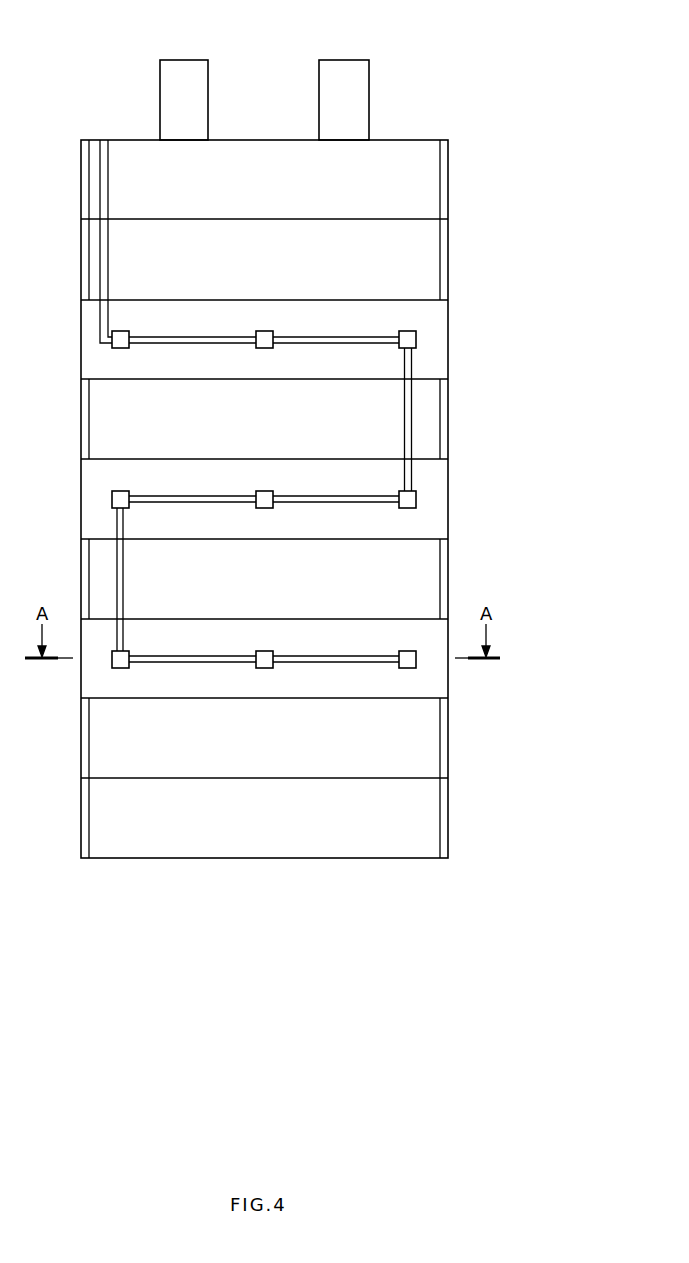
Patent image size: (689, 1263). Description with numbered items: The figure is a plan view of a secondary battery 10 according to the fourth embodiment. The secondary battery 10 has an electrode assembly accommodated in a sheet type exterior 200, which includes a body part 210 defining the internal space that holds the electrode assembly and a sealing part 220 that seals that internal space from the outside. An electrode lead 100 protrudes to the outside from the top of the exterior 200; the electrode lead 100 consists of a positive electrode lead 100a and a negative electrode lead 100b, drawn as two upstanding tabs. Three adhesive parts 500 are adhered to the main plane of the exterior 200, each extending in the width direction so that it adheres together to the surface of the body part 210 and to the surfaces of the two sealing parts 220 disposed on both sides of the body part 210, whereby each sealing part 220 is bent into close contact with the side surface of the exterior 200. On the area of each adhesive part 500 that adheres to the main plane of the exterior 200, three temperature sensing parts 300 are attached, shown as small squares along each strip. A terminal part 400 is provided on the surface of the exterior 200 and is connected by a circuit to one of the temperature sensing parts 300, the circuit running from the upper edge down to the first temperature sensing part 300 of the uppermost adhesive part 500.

The secondary battery 10 is at (476, 407).
The electrode lead 100 is at (548, 99).
The positive electrode lead 100a is at (184, 76).
The negative electrode lead 100b is at (343, 76).
The sheet type exterior 200 is at (326, 778).
The body part 210 is at (423, 738).
The sealing part 220 is at (296, 818).
The temperature sensing part 300 is at (118, 348).
The terminal part 400 is at (108, 139).
The adhesive part 500 is at (430, 500).